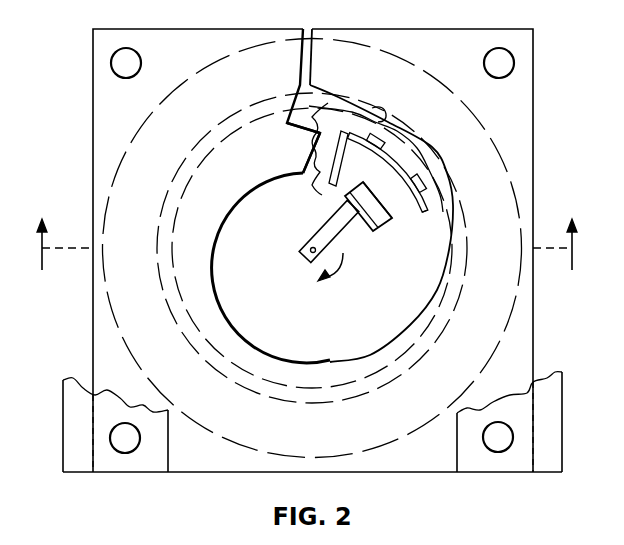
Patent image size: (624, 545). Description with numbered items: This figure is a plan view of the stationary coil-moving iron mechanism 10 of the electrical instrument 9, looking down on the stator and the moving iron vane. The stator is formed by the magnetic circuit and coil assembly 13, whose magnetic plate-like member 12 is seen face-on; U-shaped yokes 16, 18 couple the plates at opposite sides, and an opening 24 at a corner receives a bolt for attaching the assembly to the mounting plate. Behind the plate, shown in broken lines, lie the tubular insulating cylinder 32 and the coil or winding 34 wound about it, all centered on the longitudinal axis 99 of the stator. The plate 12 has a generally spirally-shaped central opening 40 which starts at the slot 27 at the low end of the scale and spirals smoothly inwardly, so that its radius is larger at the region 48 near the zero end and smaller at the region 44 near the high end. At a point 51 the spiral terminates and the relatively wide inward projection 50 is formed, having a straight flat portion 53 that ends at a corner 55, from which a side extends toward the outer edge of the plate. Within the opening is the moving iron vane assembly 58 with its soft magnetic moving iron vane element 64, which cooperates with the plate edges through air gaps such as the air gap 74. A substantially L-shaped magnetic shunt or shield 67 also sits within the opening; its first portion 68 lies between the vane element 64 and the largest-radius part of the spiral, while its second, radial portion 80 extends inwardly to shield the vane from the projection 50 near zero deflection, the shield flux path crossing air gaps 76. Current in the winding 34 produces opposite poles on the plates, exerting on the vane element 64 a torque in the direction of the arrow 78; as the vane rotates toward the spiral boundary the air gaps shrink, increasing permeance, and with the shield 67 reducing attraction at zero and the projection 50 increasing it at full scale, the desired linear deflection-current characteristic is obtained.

The electrical instrument 9 is at (53, 336).
The stationary coil-moving iron mechanism 10 is at (332, 248).
The magnetic plate-like member 12 is at (518, 102).
The magnetic circuit and coil assembly 13 is at (246, 474).
The U-shaped channel member or yoke 16 is at (63, 430).
The U-shaped channel member or yoke 18 is at (562, 423).
The opening 24 is at (495, 430).
The slot 27 is at (311, 52).
The tubular insulating cylinder 32 is at (187, 197).
The coil or winding 34 is at (137, 140).
The central opening 40 is at (358, 335).
The region of spirally-shaped opening 44 is at (263, 180).
The region of spirally-shaped opening 48 is at (385, 118).
The inward projection 50 is at (303, 163).
The point 51 is at (302, 193).
The straight flat portion 53 is at (326, 158).
The corner 55 is at (337, 96).
The moving iron vane assembly 58 is at (358, 258).
The moving iron vane element 64 is at (380, 228).
The magnetic shunt or shield 67 is at (427, 200).
The first portion of shield 68 is at (392, 160).
The air gap 74 is at (409, 212).
The air gaps 76 is at (402, 147).
The arrow 78 is at (343, 253).
The second or radial portion of shield 80 is at (335, 162).
The longitudinal axis 99 is at (310, 247).